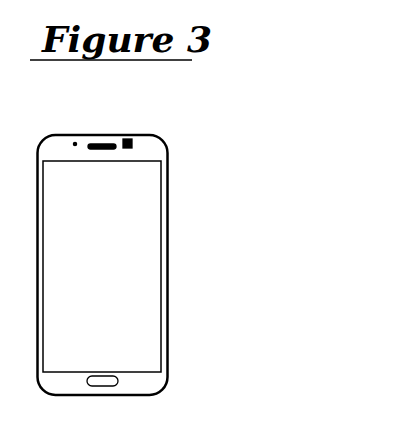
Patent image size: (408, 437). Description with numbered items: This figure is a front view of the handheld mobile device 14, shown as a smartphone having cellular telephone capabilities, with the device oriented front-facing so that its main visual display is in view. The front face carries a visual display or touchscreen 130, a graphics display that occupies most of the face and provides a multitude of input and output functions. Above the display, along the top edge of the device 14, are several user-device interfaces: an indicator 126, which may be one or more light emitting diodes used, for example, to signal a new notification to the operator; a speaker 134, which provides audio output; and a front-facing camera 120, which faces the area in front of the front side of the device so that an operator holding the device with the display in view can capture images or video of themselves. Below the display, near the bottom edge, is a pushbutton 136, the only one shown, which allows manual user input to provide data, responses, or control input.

The handheld mobile device 14 is at (167, 255).
The front-facing camera 120 is at (131, 139).
The indicator 126 is at (82, 143).
The visual display 130 is at (150, 205).
The speaker 134 is at (103, 143).
The pushbutton 136 is at (118, 382).